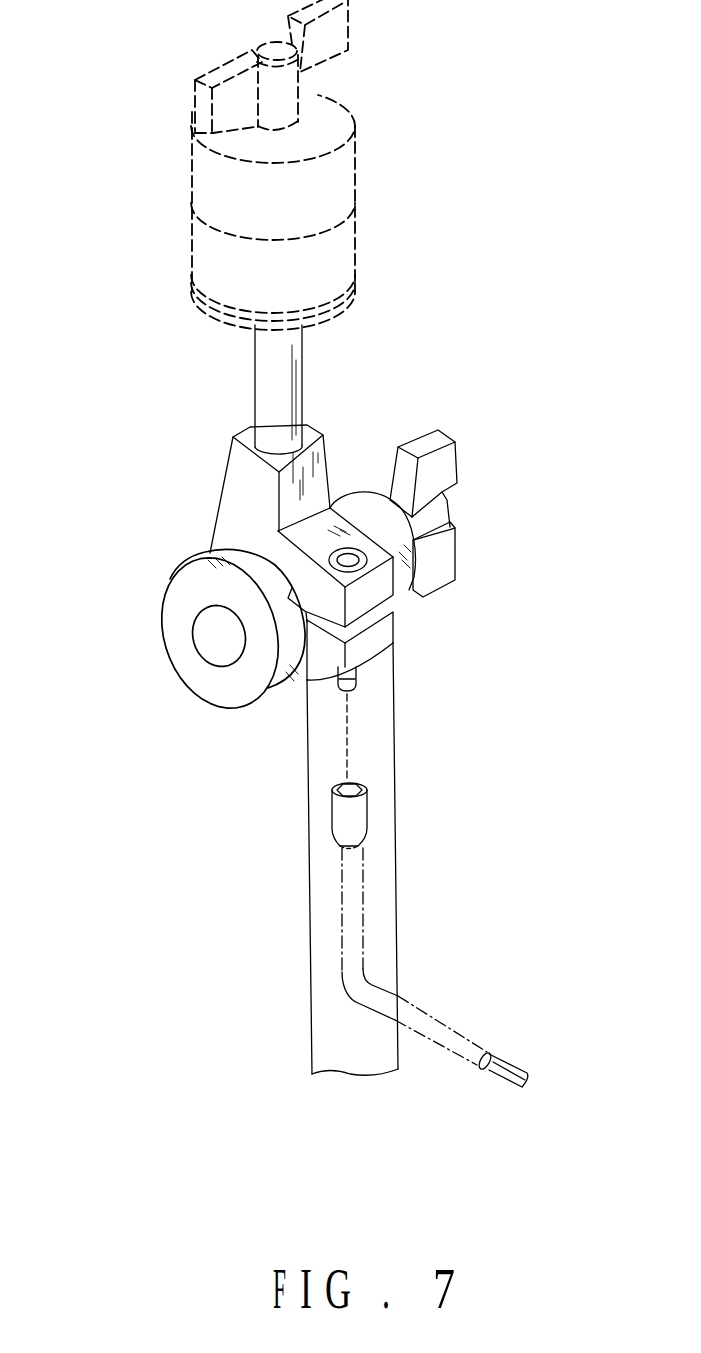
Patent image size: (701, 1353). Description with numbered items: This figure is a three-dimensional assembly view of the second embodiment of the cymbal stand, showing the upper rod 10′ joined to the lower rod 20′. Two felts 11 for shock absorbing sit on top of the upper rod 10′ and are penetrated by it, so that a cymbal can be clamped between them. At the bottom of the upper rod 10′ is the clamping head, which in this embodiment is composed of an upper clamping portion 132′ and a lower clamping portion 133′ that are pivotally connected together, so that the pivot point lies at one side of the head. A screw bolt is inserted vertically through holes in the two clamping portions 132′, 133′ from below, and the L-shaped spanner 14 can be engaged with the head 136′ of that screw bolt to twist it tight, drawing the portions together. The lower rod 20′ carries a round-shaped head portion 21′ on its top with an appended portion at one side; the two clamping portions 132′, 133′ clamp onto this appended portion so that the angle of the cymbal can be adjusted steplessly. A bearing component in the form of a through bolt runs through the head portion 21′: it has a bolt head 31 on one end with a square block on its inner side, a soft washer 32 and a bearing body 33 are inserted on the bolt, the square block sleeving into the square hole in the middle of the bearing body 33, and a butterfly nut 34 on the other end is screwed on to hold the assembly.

The felts 11 is at (350, 170).
The upper rod 10′ is at (255, 377).
The upper clamping portion 132′ is at (235, 478).
The head portion 21′ is at (352, 495).
The butterfly nut 34 is at (448, 548).
The soft washer 32 is at (240, 553).
The bearing body 33 is at (183, 596).
The bolt head 31 is at (222, 647).
The lower clamping portion 133′ is at (387, 614).
The head of the screw bolt 136′ is at (355, 673).
The lower rod 20′ is at (383, 752).
The L-shaped spanner 14 is at (353, 907).